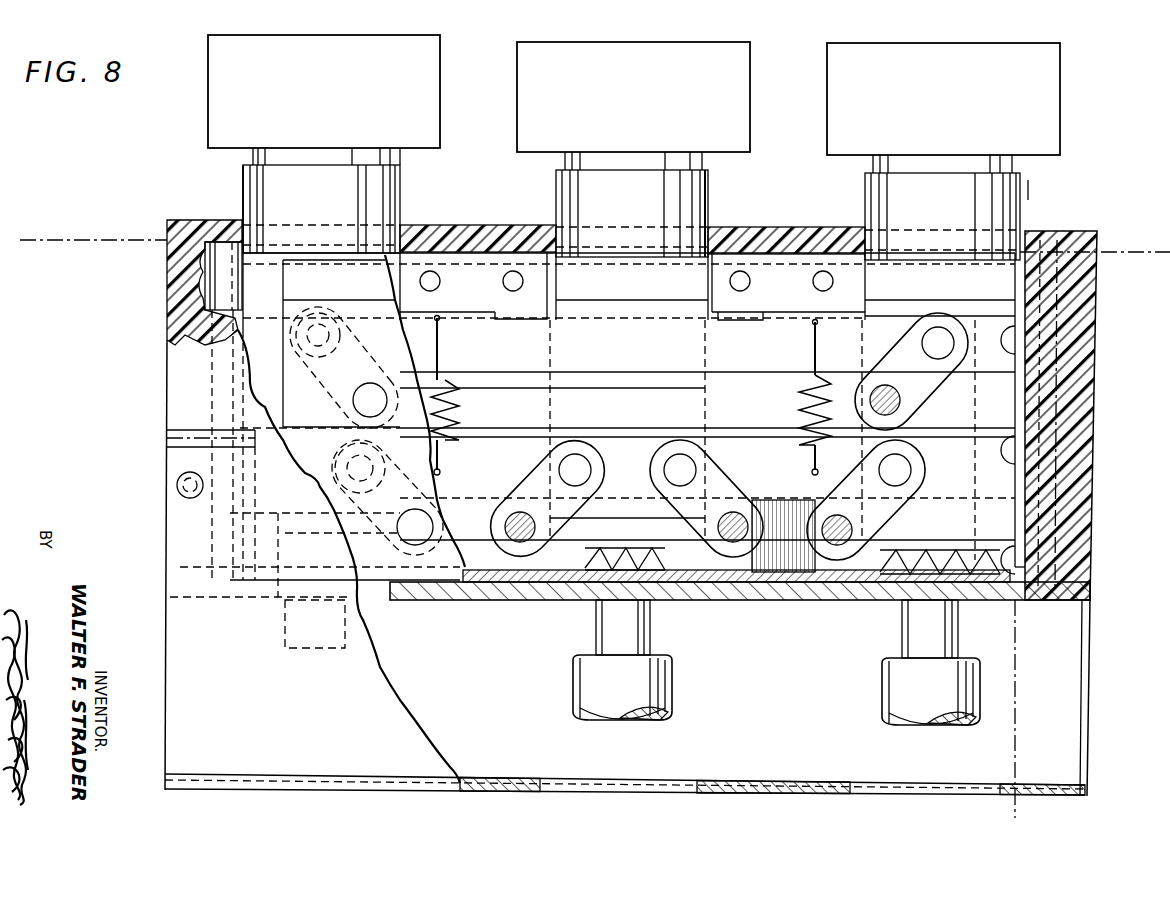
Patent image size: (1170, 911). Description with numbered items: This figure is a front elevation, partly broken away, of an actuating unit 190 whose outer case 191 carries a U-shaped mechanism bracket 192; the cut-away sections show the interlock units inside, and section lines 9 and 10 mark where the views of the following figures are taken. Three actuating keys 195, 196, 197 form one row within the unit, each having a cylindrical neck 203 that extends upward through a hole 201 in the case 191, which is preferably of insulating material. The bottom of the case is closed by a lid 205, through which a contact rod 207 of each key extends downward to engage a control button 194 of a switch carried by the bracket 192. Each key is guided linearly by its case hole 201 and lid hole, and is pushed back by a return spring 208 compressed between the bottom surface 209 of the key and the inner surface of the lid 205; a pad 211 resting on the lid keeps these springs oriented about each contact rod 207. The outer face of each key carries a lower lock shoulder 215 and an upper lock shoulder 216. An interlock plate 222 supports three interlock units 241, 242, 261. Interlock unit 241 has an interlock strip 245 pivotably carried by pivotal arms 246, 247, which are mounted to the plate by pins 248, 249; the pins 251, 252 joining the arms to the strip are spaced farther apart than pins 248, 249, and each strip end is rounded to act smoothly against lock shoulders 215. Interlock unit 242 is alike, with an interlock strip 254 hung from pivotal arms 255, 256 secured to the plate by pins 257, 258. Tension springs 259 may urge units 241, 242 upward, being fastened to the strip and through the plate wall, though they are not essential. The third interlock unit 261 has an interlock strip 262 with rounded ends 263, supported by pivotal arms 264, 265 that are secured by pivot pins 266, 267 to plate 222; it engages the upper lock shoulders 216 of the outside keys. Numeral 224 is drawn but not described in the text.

The section line 9- 9 is at (1030, 190).
The section line 10- 10 is at (57, 240).
The actuating unit 190 is at (165, 300).
The outer case 191 is at (228, 222).
The U-shaped mechanism bracket 192 is at (185, 738).
The control button 194 is at (575, 690).
The actuating key 195 is at (365, 207).
The actuating key 196 is at (665, 213).
The actuating key 197 is at (905, 198).
The hole 201 is at (390, 240).
The cylindrical neck 203 is at (243, 190).
The lid 205 is at (745, 603).
The contact rod 207 is at (650, 632).
The return spring 208 is at (560, 593).
The bottom surface 209 is at (1025, 575).
The pad 211 is at (835, 602).
The lower lock shoulder 215 is at (620, 430).
The upper lock shoulder 216 is at (1025, 358).
The interlock plate 222 is at (440, 470).
The top plate 224 is at (478, 232).
The interlock unit 241 is at (745, 463).
The interlock unit 242 is at (470, 458).
The interlock strip 245 is at (795, 489).
The pivotal arm 246 is at (905, 475).
The pivotal arm 247 is at (683, 510).
The pivot pin 248 is at (870, 542).
The pivot pin 249 is at (668, 562).
The pivot pin 251 is at (908, 465).
The pivot pin 252 is at (682, 468).
The interlock strip 254 is at (523, 467).
The pivotal arm 255 is at (592, 520).
The pivotal arm 256 is at (320, 480).
The pin 257 is at (432, 527).
The pin 258 is at (437, 540).
The tension spring 259 is at (455, 405).
The third interlock unit 261 is at (645, 365).
The interlock strip 262 is at (621, 357).
The rounded end 263 is at (950, 315).
The pivotal arm 264 is at (915, 335).
The pivotal arm 265 is at (440, 347).
The pivot pin 266 is at (900, 402).
The pivot pin 267 is at (368, 400).